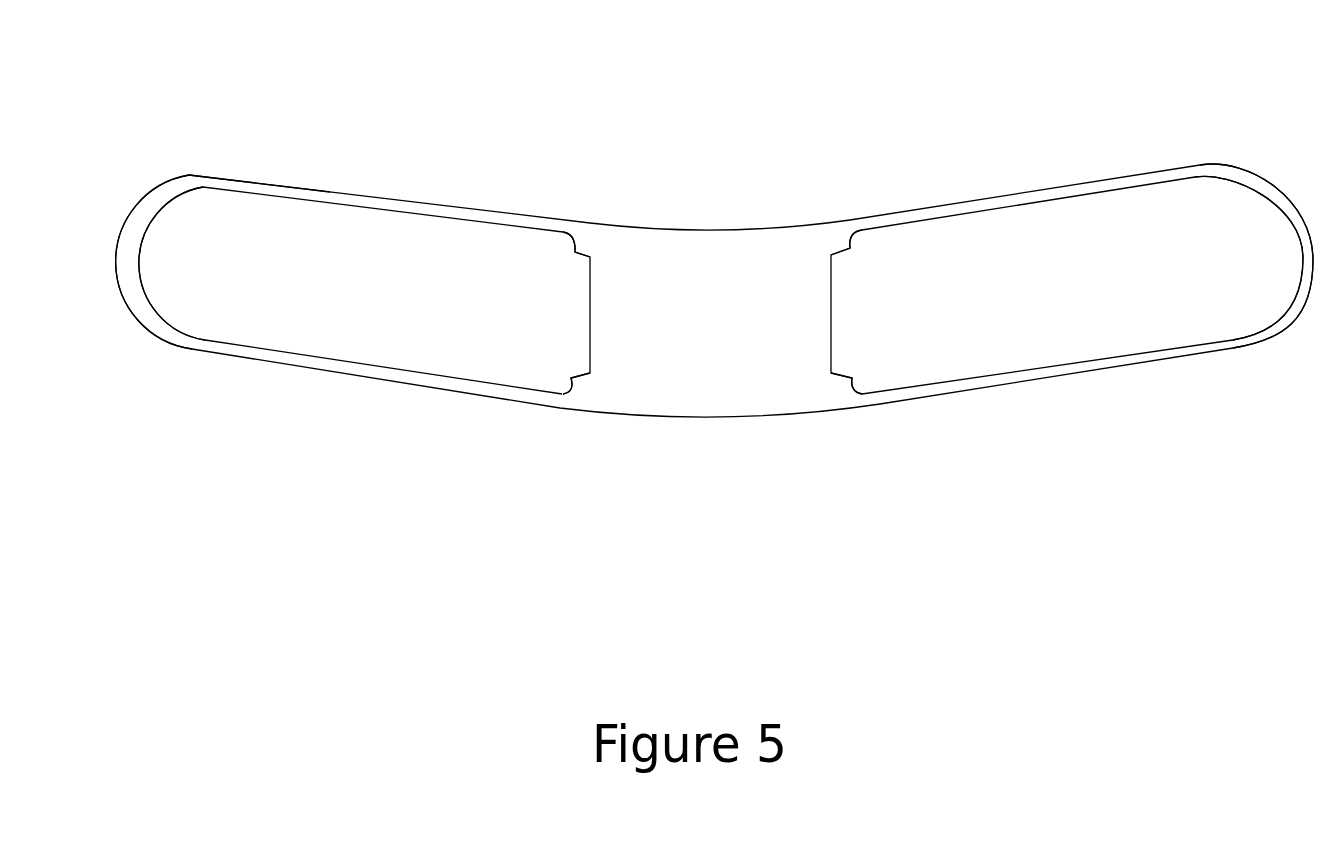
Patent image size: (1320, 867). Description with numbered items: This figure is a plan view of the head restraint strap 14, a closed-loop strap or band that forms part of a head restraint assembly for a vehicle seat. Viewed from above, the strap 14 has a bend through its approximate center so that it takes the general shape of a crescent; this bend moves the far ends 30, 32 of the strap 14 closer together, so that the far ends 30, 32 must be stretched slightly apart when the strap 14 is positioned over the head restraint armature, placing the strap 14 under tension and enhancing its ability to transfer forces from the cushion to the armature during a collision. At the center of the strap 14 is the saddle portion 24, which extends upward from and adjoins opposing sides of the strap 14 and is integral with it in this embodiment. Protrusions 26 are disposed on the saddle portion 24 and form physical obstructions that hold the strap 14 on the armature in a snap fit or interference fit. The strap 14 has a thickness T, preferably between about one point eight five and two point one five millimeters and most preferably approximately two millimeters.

The strap 14 is at (1083, 190).
The saddle portion 24 is at (676, 285).
The protrusions 26 is at (575, 251).
The far end 30 is at (123, 237).
The far end 32 is at (1303, 227).
The thickness T is at (318, 240).